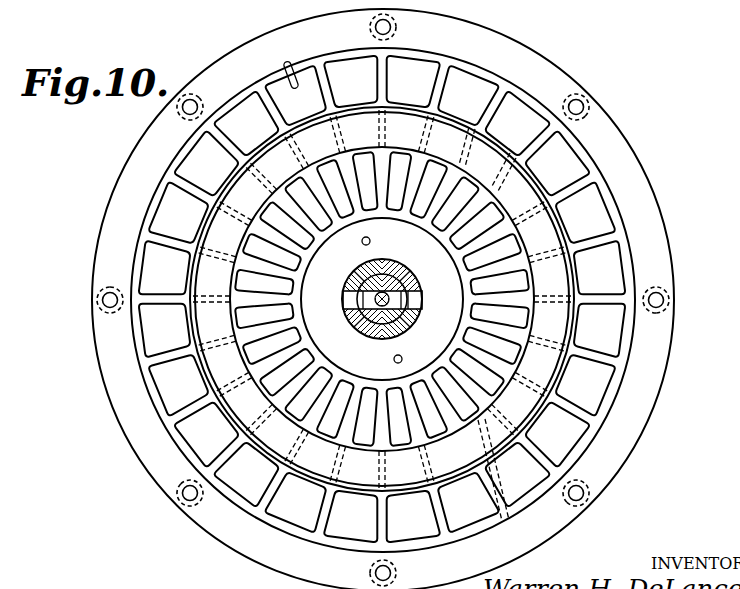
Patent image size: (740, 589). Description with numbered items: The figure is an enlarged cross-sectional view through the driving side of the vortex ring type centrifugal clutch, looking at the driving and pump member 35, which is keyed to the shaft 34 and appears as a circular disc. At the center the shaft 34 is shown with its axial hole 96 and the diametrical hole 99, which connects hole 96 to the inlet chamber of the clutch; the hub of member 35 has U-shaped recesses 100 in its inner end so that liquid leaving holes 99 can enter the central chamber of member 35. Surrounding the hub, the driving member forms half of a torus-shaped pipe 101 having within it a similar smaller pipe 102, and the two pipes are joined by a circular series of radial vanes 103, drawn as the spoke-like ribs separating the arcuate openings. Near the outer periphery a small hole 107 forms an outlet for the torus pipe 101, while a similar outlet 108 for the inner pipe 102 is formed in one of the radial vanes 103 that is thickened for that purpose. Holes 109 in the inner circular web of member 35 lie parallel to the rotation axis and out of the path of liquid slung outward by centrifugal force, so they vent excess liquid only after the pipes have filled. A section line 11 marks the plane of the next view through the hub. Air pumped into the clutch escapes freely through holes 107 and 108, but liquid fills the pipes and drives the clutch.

The section line 11— 11 is at (333, 352).
The shaft 34 is at (385, 340).
The driving and pump member 35 is at (639, 179).
The hole 96 is at (390, 272).
The diametrical hole 99 is at (362, 299).
The U-shaped recesses 100 is at (428, 299).
The torus-shaped pipe 101 is at (567, 158).
The smaller pipe 102 is at (513, 180).
The radial vanes 103 is at (557, 200).
The small hole 107 is at (297, 87).
The outlet 108 is at (494, 497).
The holes 109 is at (370, 241).